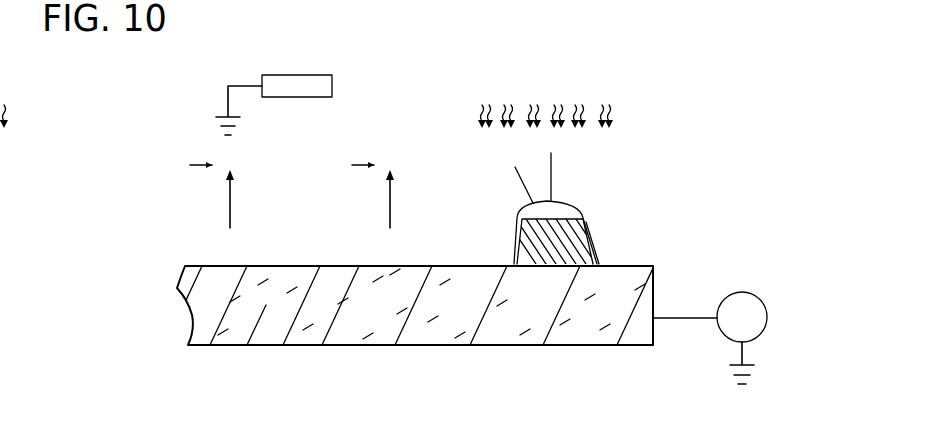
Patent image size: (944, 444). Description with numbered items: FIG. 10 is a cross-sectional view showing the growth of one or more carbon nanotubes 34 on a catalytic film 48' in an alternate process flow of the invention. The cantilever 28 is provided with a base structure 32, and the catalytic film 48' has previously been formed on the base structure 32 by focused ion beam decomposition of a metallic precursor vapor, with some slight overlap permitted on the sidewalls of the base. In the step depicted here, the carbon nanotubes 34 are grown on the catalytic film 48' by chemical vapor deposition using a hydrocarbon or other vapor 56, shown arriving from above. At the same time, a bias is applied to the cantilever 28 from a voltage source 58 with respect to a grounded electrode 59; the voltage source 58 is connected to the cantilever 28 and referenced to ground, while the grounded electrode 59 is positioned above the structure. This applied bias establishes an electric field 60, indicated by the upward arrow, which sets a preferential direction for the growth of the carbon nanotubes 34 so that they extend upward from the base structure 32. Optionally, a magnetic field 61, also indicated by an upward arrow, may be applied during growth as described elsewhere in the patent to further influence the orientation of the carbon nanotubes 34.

The cantilever 28 is at (655, 337).
The base structure 32 is at (543, 237).
The carbon nanotubes 34 is at (515, 167).
The catalytic film 48' is at (583, 232).
The vapor 56 is at (612, 113).
The voltage source 58 is at (762, 304).
The grounded electrode 59 is at (290, 75).
The electric field 60 is at (390, 221).
The magnetic field 61 is at (230, 221).